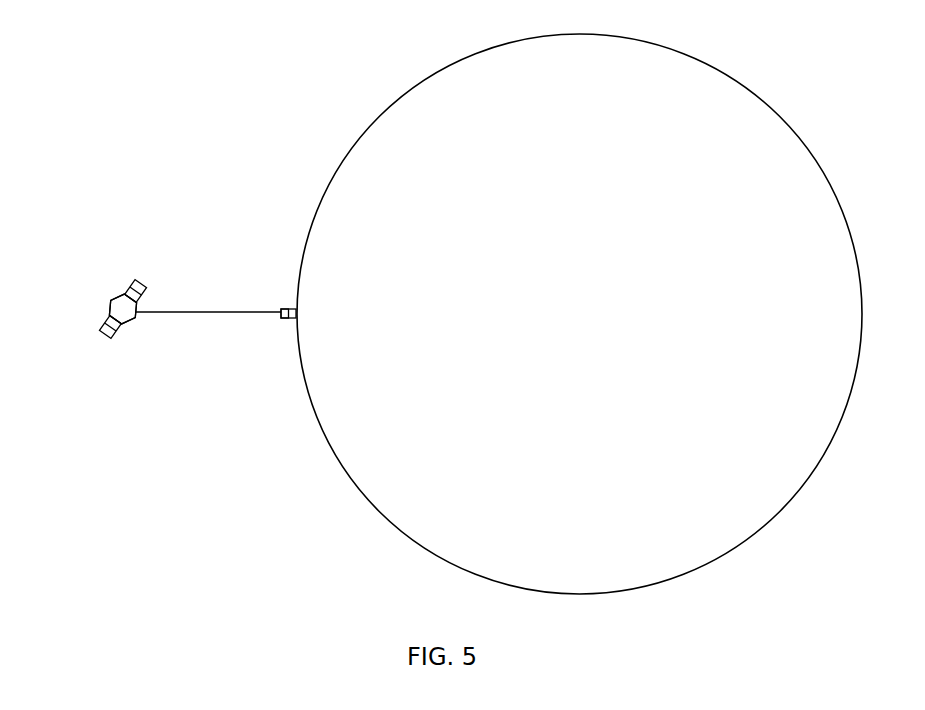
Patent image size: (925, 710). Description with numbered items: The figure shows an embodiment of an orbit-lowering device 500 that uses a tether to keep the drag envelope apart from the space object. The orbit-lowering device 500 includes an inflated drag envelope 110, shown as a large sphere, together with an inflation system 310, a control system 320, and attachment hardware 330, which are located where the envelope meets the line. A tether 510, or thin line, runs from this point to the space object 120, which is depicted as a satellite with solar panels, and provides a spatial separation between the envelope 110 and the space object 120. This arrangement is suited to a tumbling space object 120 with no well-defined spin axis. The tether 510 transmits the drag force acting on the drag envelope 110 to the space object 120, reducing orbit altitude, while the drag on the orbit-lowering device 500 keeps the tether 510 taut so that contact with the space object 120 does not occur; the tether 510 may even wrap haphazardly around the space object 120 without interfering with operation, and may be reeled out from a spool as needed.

The drag envelope 110 is at (367, 500).
The space object 120 is at (112, 301).
The inflation system 310 is at (293, 308).
The control system 320 is at (285, 308).
The attachment hardware 330 is at (136, 316).
The tether 510 is at (250, 313).
The orbit-lowering device 500 is at (198, 459).